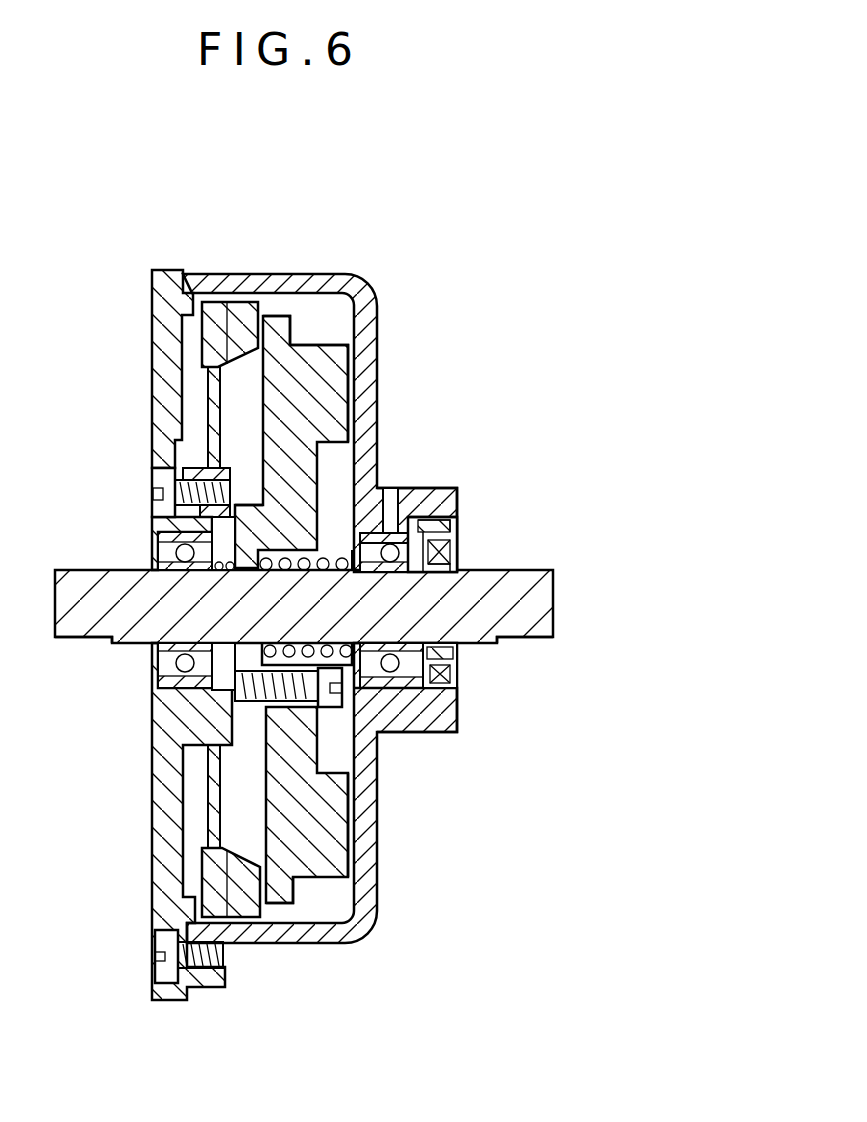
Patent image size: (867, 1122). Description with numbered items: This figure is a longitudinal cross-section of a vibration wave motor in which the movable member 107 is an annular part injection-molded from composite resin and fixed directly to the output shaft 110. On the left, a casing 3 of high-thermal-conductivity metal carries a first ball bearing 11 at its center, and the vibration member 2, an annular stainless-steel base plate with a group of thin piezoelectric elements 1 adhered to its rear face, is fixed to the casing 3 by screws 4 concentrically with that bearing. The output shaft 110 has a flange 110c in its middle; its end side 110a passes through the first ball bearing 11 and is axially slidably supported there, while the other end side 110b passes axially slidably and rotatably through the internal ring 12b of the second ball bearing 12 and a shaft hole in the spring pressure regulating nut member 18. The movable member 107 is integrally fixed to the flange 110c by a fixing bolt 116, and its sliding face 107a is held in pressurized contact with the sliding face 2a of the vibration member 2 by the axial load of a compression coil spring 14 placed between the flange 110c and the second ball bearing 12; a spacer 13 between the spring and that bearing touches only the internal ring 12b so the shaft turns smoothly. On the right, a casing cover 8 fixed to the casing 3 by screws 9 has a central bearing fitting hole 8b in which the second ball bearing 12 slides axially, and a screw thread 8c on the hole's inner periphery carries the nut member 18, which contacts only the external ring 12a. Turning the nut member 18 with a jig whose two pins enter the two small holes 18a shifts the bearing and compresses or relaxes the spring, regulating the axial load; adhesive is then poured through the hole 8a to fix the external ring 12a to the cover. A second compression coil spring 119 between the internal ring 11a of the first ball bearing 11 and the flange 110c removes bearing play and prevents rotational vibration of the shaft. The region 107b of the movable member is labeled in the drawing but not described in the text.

The piezoelectric elements 1 is at (197, 288).
The vibration member 2 is at (218, 292).
The sliding face of the vibration member 2a is at (262, 900).
The casing 3 is at (163, 310).
The screws 4 is at (152, 470).
The casing cover 8 is at (366, 925).
The hole of the casing cover 8a is at (405, 492).
The bearing fitting hole 8b is at (458, 537).
The screw thread 8c is at (426, 515).
The screws 9 is at (158, 937).
The first ball bearing 11 is at (158, 663).
The internal ring of the first ball bearing 11a is at (157, 567).
The second ball bearing 12 is at (385, 690).
The external ring of the second ball bearing 12a is at (435, 732).
The internal ring of the second ball bearing 12b is at (447, 566).
The spacer 13 is at (390, 497).
The compression coil spring 14 is at (321, 555).
The spring pressure regulating nut member 18 is at (432, 520).
The small holes 18a is at (440, 672).
The movable member 107 is at (313, 360).
The sliding face of the movable member 107a is at (265, 314).
The rotor body 107b is at (284, 318).
The output shaft 110 is at (83, 583).
The end side of the output shaft 110a is at (56, 636).
The other end side of the output shaft 110b is at (528, 627).
The flange 110c is at (278, 505).
The fixing bolt 116 is at (356, 765).
The second compression coil spring 119 is at (205, 690).